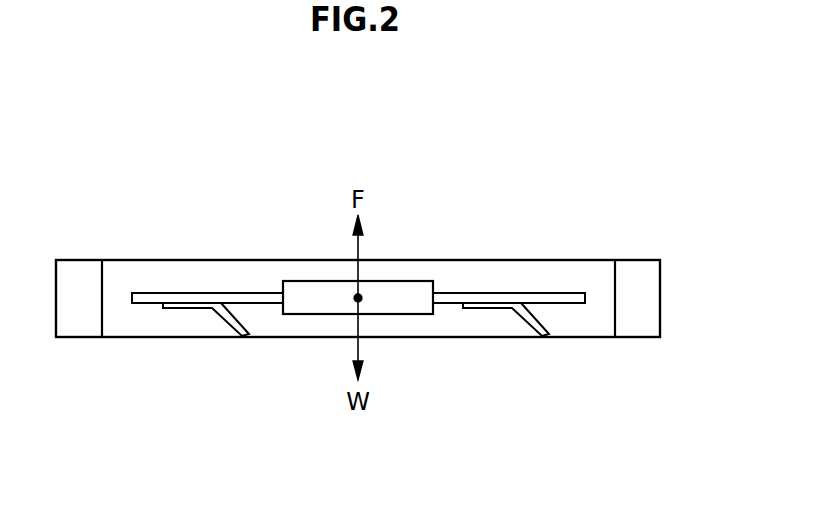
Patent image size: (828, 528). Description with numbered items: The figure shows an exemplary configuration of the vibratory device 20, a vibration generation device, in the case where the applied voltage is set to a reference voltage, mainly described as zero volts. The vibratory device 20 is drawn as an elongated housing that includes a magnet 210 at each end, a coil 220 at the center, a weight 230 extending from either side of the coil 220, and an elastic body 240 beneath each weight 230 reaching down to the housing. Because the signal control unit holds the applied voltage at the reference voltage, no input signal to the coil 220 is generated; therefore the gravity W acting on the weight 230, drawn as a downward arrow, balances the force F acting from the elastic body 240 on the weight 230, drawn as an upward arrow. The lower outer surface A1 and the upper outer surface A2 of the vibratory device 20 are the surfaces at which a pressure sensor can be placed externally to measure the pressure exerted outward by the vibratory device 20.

The vibratory device 20 is at (608, 187).
The magnet 210 is at (85, 260).
The coil 220 is at (404, 285).
The weight 230 is at (214, 293).
The elastic body 240 is at (183, 308).
The surface A1 is at (125, 337).
The surface A2 is at (160, 260).